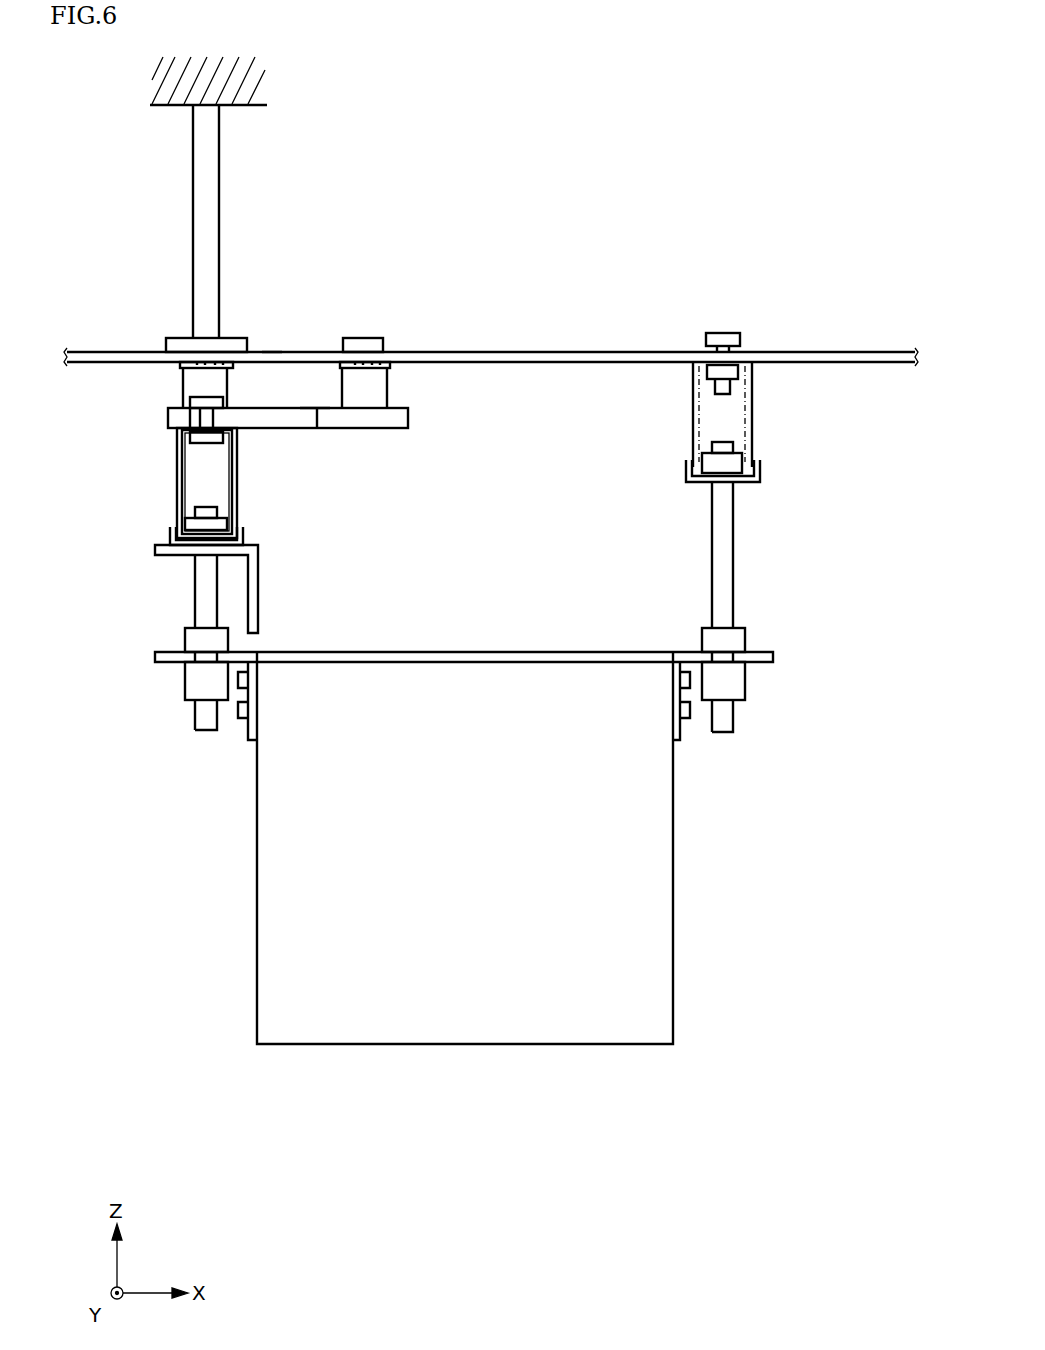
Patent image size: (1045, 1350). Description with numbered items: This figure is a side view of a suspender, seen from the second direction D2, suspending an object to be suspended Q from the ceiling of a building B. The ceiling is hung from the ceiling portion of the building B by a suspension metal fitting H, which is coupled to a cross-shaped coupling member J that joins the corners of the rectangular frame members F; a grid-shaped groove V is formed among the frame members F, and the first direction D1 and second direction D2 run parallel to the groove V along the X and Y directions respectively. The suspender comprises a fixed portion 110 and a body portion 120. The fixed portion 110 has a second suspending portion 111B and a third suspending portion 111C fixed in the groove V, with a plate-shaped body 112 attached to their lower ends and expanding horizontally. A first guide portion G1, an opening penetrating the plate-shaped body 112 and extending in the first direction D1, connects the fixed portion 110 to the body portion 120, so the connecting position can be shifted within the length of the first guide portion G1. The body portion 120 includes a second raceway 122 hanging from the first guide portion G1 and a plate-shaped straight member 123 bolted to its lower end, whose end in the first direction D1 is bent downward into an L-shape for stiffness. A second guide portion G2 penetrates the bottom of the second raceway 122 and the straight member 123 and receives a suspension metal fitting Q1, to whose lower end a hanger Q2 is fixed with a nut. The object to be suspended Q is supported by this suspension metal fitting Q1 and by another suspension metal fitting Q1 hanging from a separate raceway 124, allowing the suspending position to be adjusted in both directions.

The building B is at (258, 92).
The suspension metal fitting H is at (207, 150).
The coupling member J is at (228, 338).
The frame member F is at (82, 351).
The groove V is at (272, 351).
The first guide portion G1 is at (303, 407).
The second guide portion G2 is at (243, 540).
The fixed portion 110 is at (370, 328).
The second suspending portion 111B is at (183, 385).
The third suspending portion 111C is at (383, 385).
The plate-shaped body 112 is at (410, 415).
The body portion 120 is at (176, 470).
The second raceway 122 is at (238, 472).
The straight member 123 is at (158, 546).
The raceway 124 is at (755, 410).
The suspension metal fitting Q1 is at (205, 606).
The hanger Q2 is at (158, 658).
The object to be suspended Q is at (467, 1046).
The first direction D1 is at (700, 1252).
The second direction D2 is at (831, 1244).